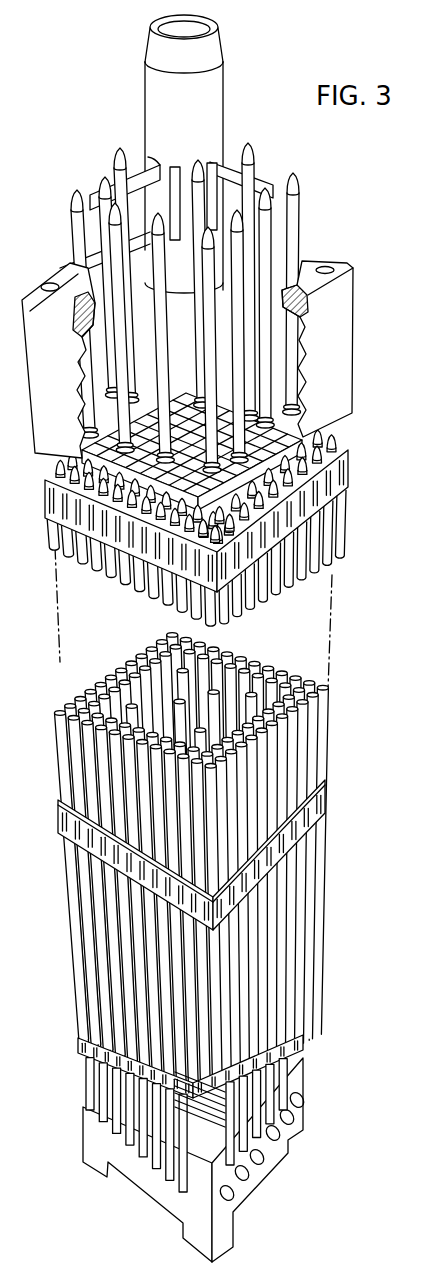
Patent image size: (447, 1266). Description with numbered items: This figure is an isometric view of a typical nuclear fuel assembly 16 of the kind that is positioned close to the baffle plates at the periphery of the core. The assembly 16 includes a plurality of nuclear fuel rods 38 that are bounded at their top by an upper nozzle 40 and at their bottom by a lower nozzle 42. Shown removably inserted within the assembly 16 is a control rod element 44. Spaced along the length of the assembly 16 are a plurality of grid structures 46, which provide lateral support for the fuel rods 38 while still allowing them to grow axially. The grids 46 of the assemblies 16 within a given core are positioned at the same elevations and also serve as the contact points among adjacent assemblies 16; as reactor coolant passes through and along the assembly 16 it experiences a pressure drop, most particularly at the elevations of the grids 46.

The fuel assembly 16 is at (393, 607).
The nuclear fuel rods 38 is at (87, 910).
The upper nozzle 40 is at (336, 330).
The lower nozzle 42 is at (302, 1080).
The control rod element 44 is at (232, 158).
The grid structures 46 is at (323, 792).